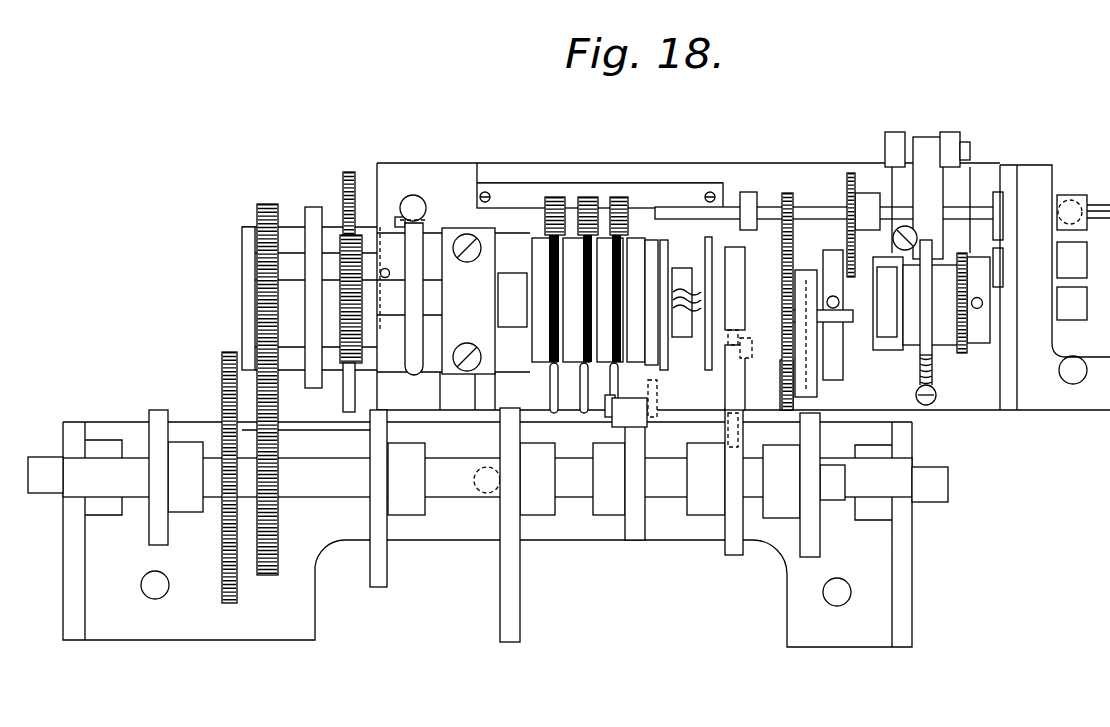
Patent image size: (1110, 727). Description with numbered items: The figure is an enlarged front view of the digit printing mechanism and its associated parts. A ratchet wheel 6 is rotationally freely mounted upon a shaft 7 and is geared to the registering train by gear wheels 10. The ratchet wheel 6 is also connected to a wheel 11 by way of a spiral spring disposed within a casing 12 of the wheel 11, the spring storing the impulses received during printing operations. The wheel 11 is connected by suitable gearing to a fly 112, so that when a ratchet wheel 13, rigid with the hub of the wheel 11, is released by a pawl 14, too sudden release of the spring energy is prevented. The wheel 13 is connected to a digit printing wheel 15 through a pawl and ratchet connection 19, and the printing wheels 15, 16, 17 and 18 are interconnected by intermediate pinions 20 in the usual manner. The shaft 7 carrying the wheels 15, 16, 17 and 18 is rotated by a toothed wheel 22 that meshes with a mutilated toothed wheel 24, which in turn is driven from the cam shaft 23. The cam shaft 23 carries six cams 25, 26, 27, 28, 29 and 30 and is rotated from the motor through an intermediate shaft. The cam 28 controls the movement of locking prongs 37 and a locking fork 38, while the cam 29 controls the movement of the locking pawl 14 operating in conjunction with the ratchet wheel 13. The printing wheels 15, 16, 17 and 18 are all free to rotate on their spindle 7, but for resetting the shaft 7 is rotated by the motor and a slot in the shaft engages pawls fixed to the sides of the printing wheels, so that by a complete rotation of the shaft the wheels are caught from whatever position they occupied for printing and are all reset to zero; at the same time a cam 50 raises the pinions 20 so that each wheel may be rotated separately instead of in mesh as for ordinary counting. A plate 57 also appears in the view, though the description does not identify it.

The ratchet wheel 6 is at (893, 343).
The shaft 7 is at (432, 300).
The gear wheels 10 is at (963, 250).
The wheel 11 is at (790, 377).
The casing 12 is at (800, 230).
The ratchet wheel 13 is at (745, 207).
The pawl 14 is at (745, 345).
The digit printing wheel 15 is at (648, 250).
The printing wheel 16 is at (628, 238).
The printing wheel 17 is at (598, 236).
The printing wheel 18 is at (564, 240).
The pawl and ratchet connection 19 is at (682, 292).
The intermediate pinions 20 is at (557, 210).
The toothed wheel 22 is at (278, 278).
The cam shaft 23 is at (320, 460).
The mutilated toothed wheel 24 is at (351, 176).
The cam 25 is at (150, 522).
The cam 26 is at (378, 587).
The cam 27 is at (505, 565).
The cam 28 is at (636, 540).
The cam 29 is at (735, 545).
The cam 30 is at (810, 541).
The locking prongs 37 is at (592, 432).
The locking fork 38 is at (656, 417).
The cam 50 is at (415, 255).
The plate 57 is at (313, 212).
The fly 112 is at (1109, 158).